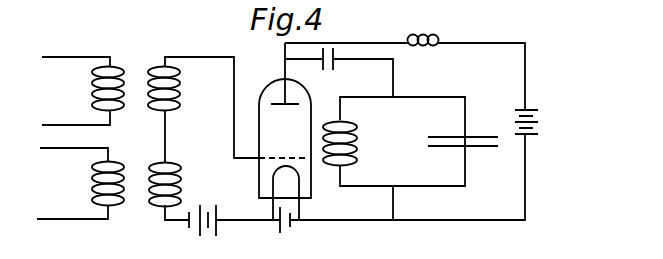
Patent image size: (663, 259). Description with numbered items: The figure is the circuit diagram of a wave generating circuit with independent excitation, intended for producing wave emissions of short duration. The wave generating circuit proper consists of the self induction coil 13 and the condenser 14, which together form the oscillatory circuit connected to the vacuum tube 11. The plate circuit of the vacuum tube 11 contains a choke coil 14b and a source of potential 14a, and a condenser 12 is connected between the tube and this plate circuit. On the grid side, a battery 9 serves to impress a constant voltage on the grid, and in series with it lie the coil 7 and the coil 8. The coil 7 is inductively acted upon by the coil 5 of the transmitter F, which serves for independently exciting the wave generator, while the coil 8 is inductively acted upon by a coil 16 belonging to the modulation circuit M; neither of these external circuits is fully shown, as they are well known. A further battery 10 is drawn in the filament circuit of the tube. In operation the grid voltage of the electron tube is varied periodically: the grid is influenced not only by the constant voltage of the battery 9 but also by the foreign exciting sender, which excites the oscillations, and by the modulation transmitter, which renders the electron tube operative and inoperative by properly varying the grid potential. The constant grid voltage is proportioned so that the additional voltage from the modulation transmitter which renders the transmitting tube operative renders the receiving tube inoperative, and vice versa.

The coil 5 is at (83, 91).
The coil 16 is at (80, 183).
The coil 7 is at (203, 110).
The coil 8 is at (178, 192).
The battery 9 is at (231, 230).
The filament battery 10 is at (292, 229).
The vacuum tube 11 is at (285, 131).
The condenser 12 is at (339, 70).
The self induction coil 13 is at (394, 158).
The condenser 14 is at (463, 130).
The source of potential 14a is at (543, 125).
The choke coil 14b is at (405, 58).